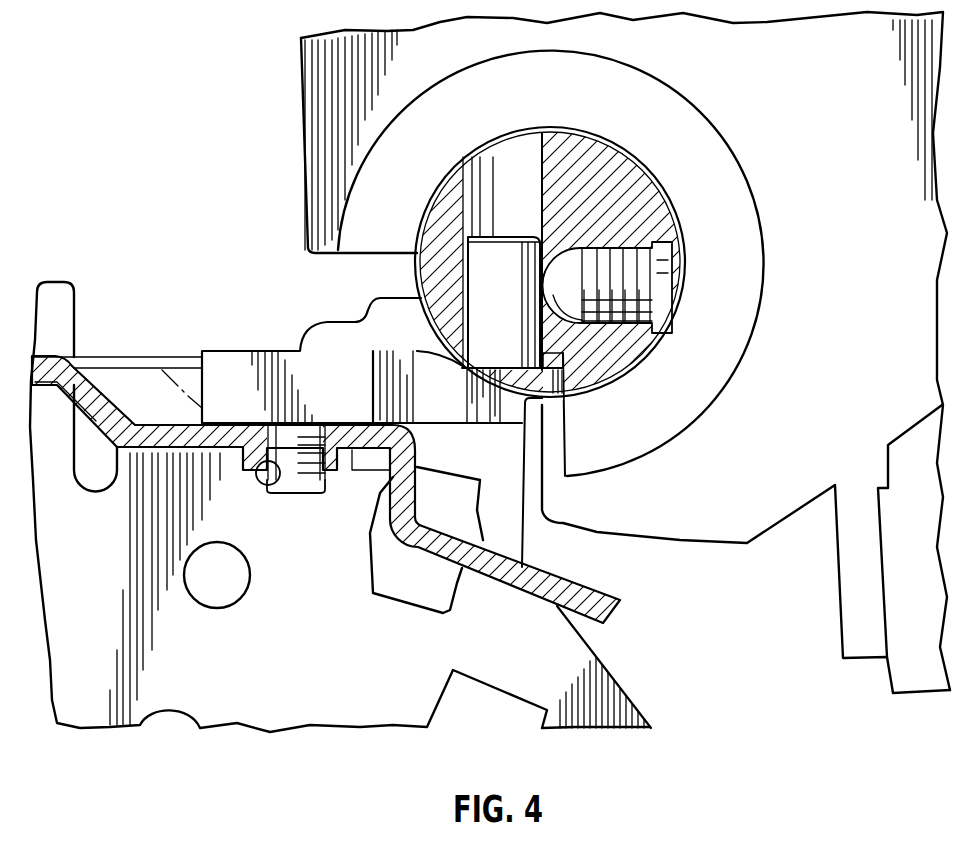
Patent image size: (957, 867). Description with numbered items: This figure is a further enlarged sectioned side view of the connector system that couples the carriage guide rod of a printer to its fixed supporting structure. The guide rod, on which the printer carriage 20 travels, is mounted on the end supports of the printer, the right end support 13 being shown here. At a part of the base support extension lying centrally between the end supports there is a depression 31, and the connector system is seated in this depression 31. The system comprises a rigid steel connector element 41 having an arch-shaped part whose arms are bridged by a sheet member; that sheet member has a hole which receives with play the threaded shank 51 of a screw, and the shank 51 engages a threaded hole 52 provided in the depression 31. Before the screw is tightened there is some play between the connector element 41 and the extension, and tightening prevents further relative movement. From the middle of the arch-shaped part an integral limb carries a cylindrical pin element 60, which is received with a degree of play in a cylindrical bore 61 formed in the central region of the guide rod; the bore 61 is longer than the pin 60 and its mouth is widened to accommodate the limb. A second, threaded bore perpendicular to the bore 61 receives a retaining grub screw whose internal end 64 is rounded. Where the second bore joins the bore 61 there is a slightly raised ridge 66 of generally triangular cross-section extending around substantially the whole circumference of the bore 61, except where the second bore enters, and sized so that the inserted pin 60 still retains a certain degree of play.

The right end support 13 is at (577, 662).
The printer carriage 20 is at (772, 487).
The depression 31 is at (110, 395).
The connector element 41 is at (250, 351).
The threaded shank 51 is at (297, 493).
The threaded hole 52 is at (268, 494).
The cylindrical pin element 60 is at (520, 258).
The cylindrical bore 61 is at (542, 163).
The internal end 64 is at (563, 267).
The ridge 66 is at (463, 283).